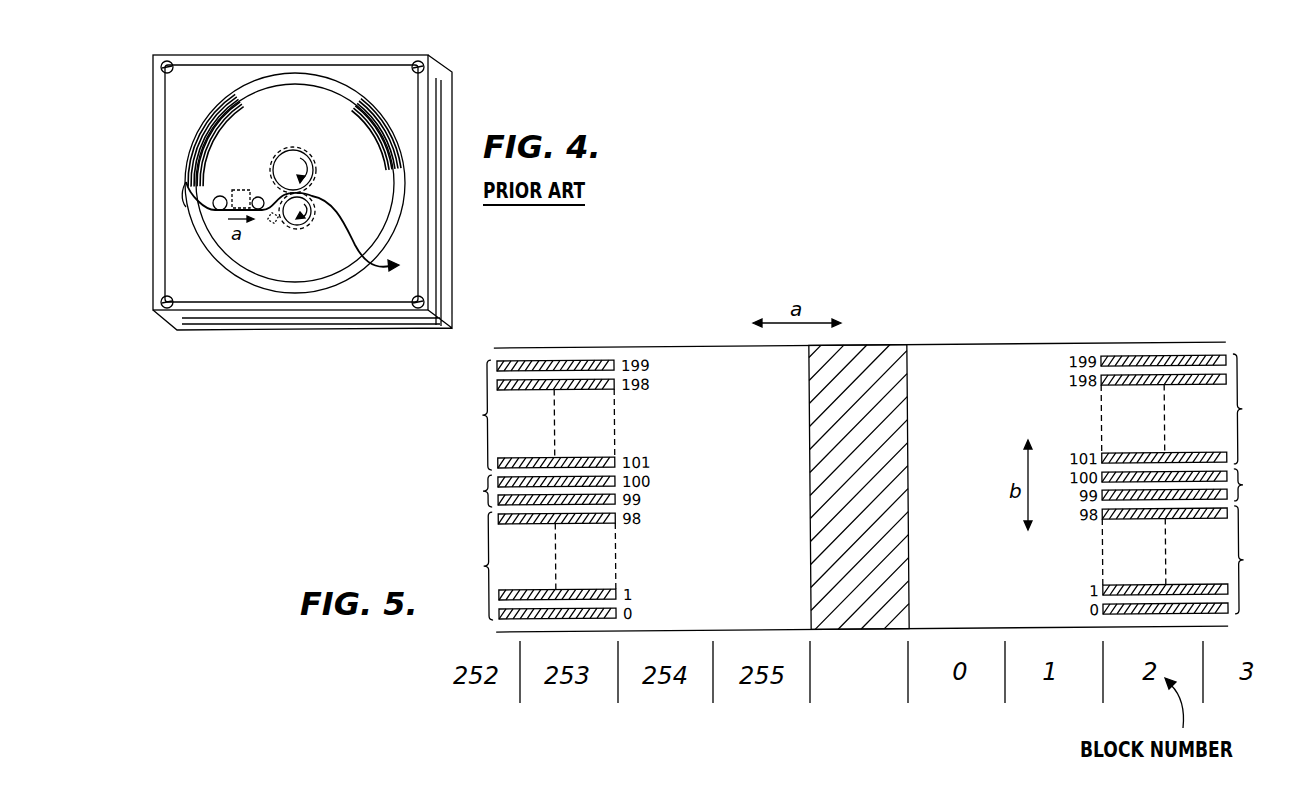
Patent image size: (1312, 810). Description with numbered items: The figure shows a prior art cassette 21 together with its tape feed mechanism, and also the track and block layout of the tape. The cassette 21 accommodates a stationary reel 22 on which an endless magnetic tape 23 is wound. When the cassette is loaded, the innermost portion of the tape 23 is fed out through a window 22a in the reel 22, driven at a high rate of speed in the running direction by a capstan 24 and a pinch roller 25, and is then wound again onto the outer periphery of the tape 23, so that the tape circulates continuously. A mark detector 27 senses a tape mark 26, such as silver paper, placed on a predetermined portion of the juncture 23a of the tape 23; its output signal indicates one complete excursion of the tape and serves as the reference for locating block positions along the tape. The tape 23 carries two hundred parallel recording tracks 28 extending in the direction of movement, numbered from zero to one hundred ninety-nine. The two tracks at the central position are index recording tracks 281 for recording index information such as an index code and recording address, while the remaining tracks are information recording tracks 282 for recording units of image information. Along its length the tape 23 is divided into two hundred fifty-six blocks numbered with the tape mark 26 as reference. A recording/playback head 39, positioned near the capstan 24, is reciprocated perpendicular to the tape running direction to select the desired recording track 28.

In FIG. 4, the cassette 21 is at (400, 58).
In FIG. 4, the stationary reel 22 is at (383, 153).
In FIG. 4, the window 22a is at (192, 200).
In FIG. 4, the endless magnetic tape 23 is at (180, 143).
In FIG. 5, the endless magnetic tape 23 is at (992, 345).
In FIG. 5, the juncture 23a is at (848, 338).
In FIG. 4, the capstan 24 is at (292, 149).
In FIG. 4, the pinch roller 25 is at (292, 228).
In FIG. 5, the tape mark 26 is at (806, 416).
In FIG. 4, the mark detector 27 is at (271, 225).
In FIG. 5, the recording tracks 28 is at (556, 352).
In FIG. 5, the index recording tracks 281 is at (863, 490).
In FIG. 5, the information recording tracks 282 is at (862, 487).
In FIG. 4, the recording/playback head 39 is at (238, 190).